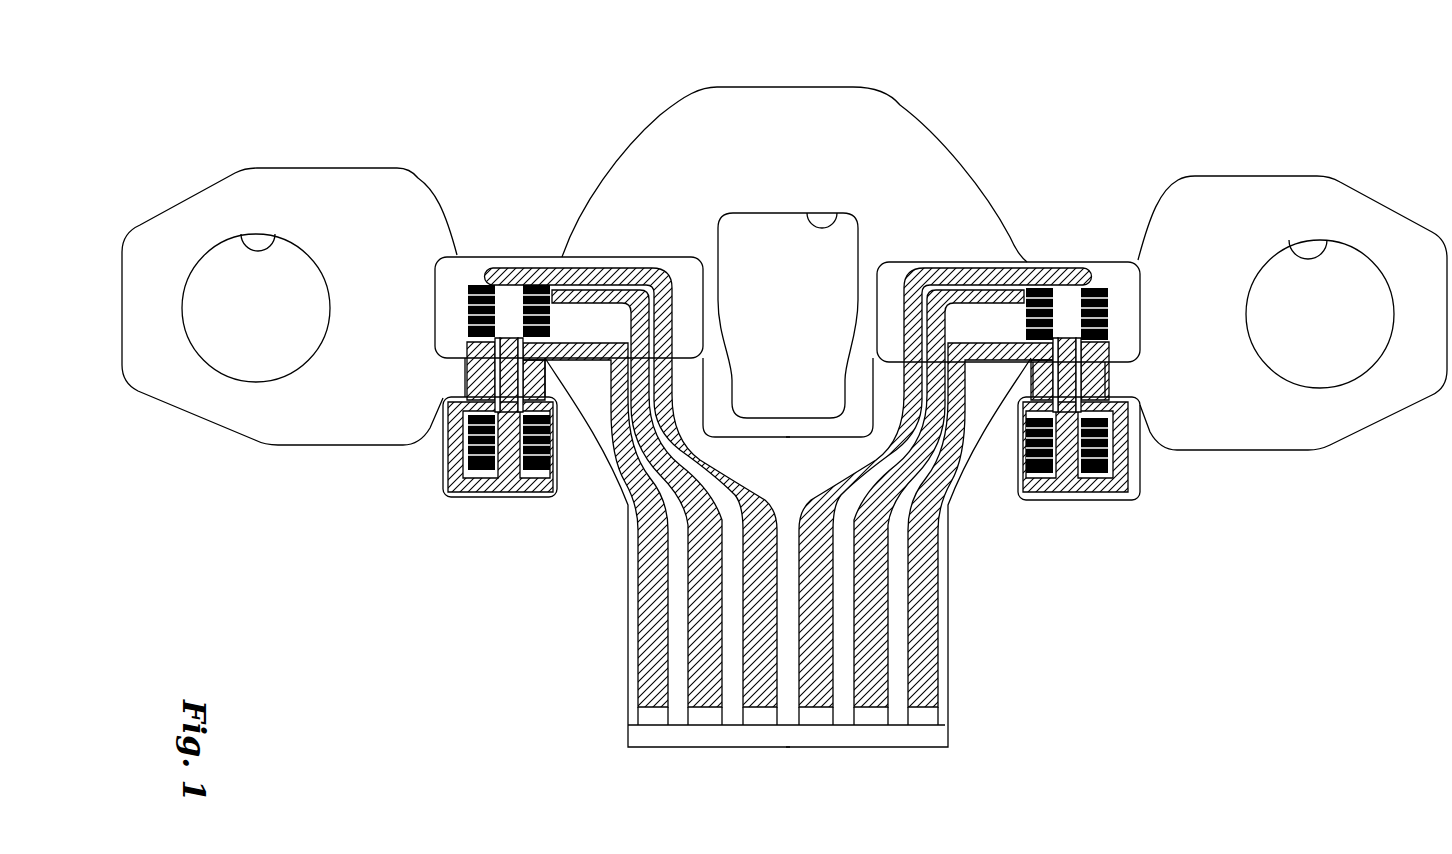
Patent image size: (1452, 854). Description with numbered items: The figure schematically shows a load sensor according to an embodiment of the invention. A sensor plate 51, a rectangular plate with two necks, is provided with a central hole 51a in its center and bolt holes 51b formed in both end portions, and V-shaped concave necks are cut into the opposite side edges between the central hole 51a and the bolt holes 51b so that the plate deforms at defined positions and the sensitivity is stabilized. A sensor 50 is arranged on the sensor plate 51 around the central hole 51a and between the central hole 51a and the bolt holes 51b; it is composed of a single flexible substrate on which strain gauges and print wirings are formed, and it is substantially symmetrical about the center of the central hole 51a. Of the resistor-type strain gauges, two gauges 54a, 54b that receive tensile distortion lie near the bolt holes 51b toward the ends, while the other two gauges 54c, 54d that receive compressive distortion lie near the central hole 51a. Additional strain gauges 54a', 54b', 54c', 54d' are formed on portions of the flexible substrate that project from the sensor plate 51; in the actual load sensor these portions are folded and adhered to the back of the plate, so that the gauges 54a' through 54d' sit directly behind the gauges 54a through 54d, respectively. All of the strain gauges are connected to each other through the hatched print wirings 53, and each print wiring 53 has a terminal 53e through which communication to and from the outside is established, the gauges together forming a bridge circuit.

The sensor 50 is at (1143, 260).
The sensor plate 51 is at (1169, 174).
The central hole 51a is at (838, 212).
The bolt holes 51b is at (245, 235).
The print wirings 53 is at (922, 607).
The terminal 53e is at (918, 718).
The strain gauge 54a is at (463, 241).
The strain gauge 54b is at (1159, 339).
The strain gauge 54c is at (532, 241).
The strain gauge 54d is at (1025, 245).
The strain gauge 54a' is at (439, 488).
The strain gauge 54b' is at (1122, 489).
The strain gauge 54c' is at (562, 488).
The strain gauge 54d' is at (1024, 489).